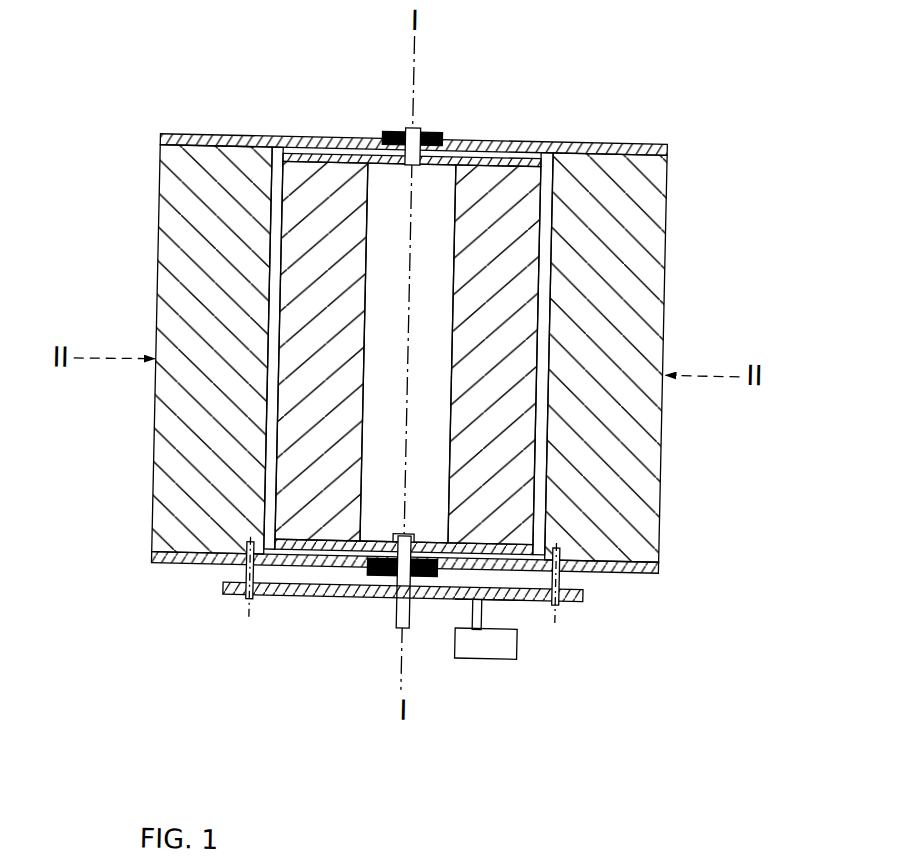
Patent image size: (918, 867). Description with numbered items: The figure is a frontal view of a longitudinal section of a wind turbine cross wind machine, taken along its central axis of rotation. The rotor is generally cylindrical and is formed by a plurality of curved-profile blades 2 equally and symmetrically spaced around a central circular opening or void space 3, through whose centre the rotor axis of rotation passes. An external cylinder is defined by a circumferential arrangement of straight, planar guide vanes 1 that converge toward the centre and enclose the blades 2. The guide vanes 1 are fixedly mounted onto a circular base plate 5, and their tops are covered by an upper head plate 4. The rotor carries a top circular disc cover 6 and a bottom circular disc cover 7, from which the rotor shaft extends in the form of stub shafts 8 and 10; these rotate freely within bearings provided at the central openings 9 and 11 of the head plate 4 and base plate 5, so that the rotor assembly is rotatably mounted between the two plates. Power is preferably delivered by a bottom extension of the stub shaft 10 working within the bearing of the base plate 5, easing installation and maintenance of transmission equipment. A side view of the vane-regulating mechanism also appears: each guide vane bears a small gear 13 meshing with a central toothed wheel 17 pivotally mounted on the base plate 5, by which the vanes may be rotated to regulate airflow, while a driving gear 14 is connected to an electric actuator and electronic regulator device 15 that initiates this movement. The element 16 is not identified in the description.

The guide vanes 1 is at (190, 188).
The blades 2 is at (315, 222).
The central circular opening 3 is at (391, 263).
The upper head plate 4 is at (270, 139).
The circular base plate 5 is at (348, 539).
The top circular disc cover 6 is at (520, 152).
The bottom circular disc cover 7 is at (520, 353).
The stub shaft 8 is at (421, 140).
The central opening 9 is at (380, 133).
The stub shaft 10 is at (378, 672).
The central opening 11 is at (370, 594).
The small gear 13 is at (228, 601).
The driving gear 14 is at (500, 601).
The electric actuator and electronic regulator device 15 is at (509, 646).
The sensor stem 16 is at (457, 705).
The central toothed wheel 17 is at (305, 599).